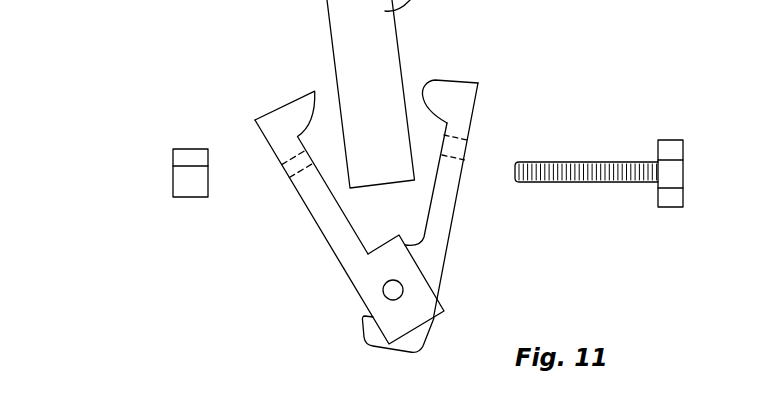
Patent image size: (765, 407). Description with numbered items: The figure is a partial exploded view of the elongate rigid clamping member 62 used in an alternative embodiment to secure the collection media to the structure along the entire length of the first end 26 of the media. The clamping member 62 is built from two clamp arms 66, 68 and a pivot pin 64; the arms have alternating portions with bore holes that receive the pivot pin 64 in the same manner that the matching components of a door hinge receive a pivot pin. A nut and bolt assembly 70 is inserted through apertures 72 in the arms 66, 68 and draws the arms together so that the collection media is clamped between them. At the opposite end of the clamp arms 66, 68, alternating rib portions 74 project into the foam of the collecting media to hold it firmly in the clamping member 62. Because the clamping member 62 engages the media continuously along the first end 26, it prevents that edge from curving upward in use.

The first end 26 is at (358, 145).
The clamping member 62 is at (464, 240).
The pivot pin 64 is at (383, 290).
The clamp arm 66 is at (325, 220).
The clamp arm 68 is at (447, 206).
The nut and bolt assembly 70 is at (187, 181).
The apertures 72 is at (288, 165).
The alternating rib portions 74 is at (281, 112).